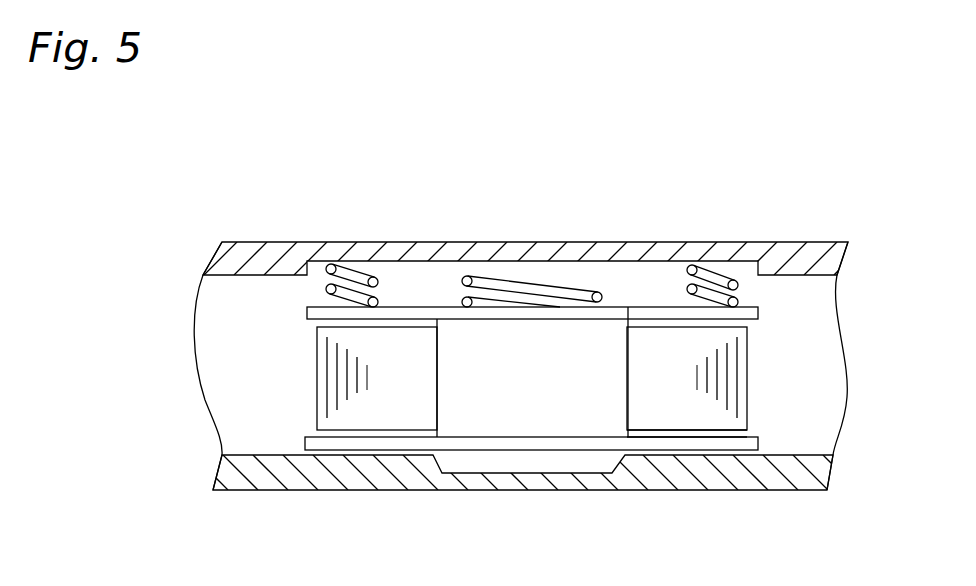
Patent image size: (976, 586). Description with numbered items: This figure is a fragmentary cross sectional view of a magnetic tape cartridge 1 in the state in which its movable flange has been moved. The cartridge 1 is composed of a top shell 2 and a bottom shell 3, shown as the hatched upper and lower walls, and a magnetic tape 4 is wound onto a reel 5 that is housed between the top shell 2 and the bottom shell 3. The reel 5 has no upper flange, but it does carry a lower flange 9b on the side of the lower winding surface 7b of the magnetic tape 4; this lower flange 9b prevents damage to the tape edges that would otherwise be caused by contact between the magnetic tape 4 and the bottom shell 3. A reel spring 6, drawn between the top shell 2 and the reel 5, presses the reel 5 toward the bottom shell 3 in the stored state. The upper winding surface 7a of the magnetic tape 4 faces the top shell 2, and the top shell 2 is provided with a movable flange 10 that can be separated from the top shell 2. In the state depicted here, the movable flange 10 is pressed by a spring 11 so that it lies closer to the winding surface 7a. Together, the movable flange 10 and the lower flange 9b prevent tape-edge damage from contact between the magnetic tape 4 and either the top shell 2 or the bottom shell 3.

The cartridge 1 is at (614, 236).
The top shell 2 is at (835, 262).
The bottom shell 3 is at (817, 478).
The magnetic tape 4 is at (383, 415).
The reel 5 is at (513, 420).
The reel spring 6 is at (515, 276).
The winding surface 7a is at (653, 327).
The winding surface 7b is at (690, 432).
The lower flange 9b is at (717, 445).
The movable flange 10 is at (408, 307).
The spring 11 is at (354, 272).